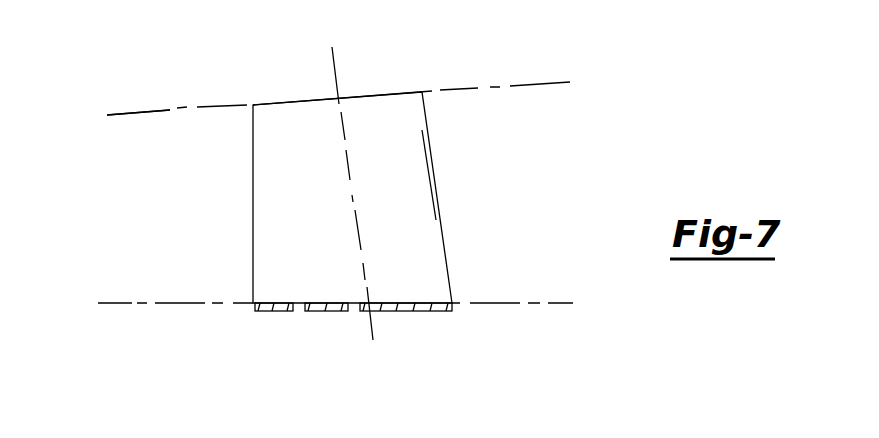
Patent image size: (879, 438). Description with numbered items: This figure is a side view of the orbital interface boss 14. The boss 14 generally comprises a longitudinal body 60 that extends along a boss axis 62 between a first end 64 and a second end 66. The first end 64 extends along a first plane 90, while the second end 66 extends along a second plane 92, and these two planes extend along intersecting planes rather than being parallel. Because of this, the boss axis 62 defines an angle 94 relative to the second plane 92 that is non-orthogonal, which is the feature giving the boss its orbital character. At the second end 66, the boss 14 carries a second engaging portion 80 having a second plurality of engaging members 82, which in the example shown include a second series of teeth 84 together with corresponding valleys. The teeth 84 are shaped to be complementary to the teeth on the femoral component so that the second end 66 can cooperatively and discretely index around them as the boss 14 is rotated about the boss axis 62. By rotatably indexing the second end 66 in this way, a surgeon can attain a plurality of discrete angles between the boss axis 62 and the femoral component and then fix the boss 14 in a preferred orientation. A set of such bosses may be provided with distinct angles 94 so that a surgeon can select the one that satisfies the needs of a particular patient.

The boss 14 is at (417, 172).
The longitudinal body 60 is at (438, 210).
The boss axis 62 is at (333, 58).
The first end 64 is at (385, 93).
The second end 66 is at (395, 308).
The second engaging portion 80 is at (325, 318).
The second plurality of engaging members 82 is at (282, 314).
The second series of teeth 84 is at (300, 312).
The first plane 90 is at (170, 110).
The second plane 92 is at (168, 303).
The angle 94 is at (357, 254).